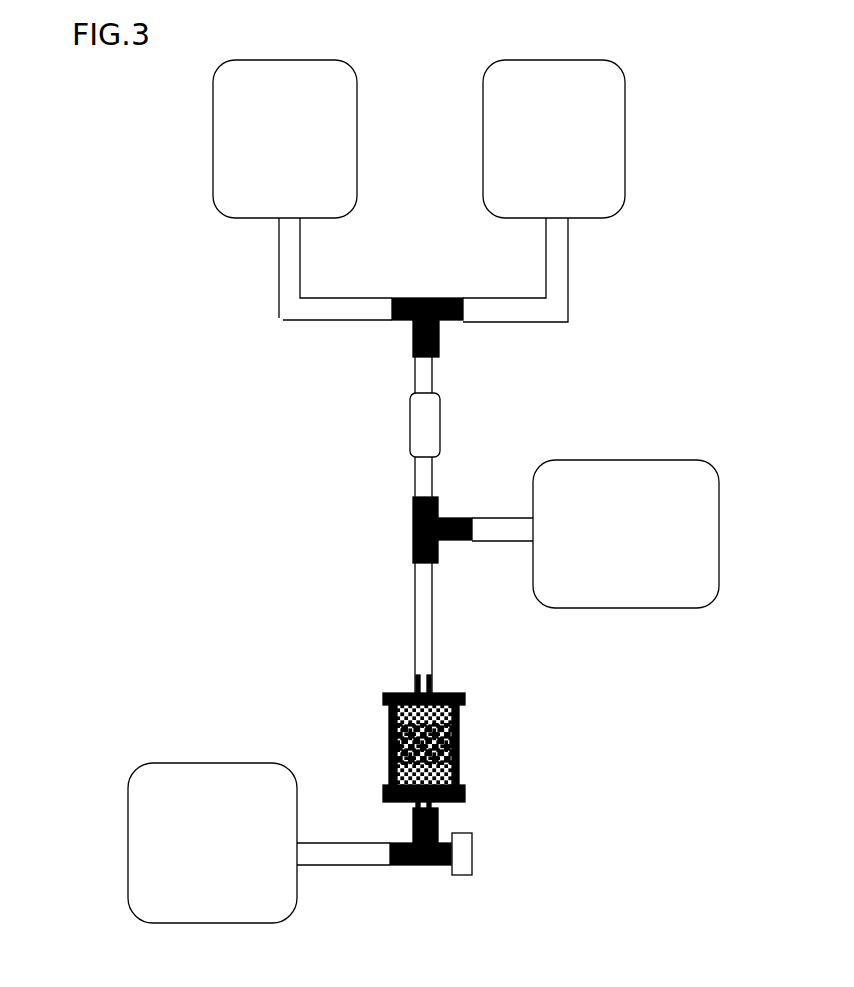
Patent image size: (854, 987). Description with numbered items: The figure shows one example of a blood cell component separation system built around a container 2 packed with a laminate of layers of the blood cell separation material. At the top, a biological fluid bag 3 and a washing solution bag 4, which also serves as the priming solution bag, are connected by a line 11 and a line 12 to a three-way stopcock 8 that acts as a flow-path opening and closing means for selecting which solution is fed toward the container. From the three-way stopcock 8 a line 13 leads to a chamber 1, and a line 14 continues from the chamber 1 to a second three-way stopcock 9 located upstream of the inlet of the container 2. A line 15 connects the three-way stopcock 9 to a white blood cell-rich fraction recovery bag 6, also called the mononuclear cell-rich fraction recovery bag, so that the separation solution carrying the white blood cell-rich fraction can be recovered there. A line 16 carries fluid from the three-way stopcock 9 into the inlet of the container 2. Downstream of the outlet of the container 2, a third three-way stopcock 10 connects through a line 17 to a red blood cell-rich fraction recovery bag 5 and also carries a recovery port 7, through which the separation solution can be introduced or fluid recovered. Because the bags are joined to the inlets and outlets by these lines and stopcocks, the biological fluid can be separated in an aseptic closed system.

The chamber 1 is at (405, 425).
The container packed with blood cell separation material 2 is at (402, 750).
The biological fluid bag 3 is at (257, 139).
The washing solution bag 4 is at (576, 139).
The red blood cell-rich fraction recovery bag 5 is at (183, 843).
The white blood cell-rich fraction recovery bag 6 is at (644, 534).
The recovery port 7 is at (476, 854).
The three-way stopcock 8 is at (427, 306).
The three-way stopcock 9 is at (416, 530).
The three-way stopcock 10 is at (420, 860).
The line 11 is at (280, 318).
The line 12 is at (570, 297).
The line 13 is at (432, 382).
The line 14 is at (432, 478).
The line 15 is at (495, 541).
The line 16 is at (412, 650).
The line 17 is at (335, 865).